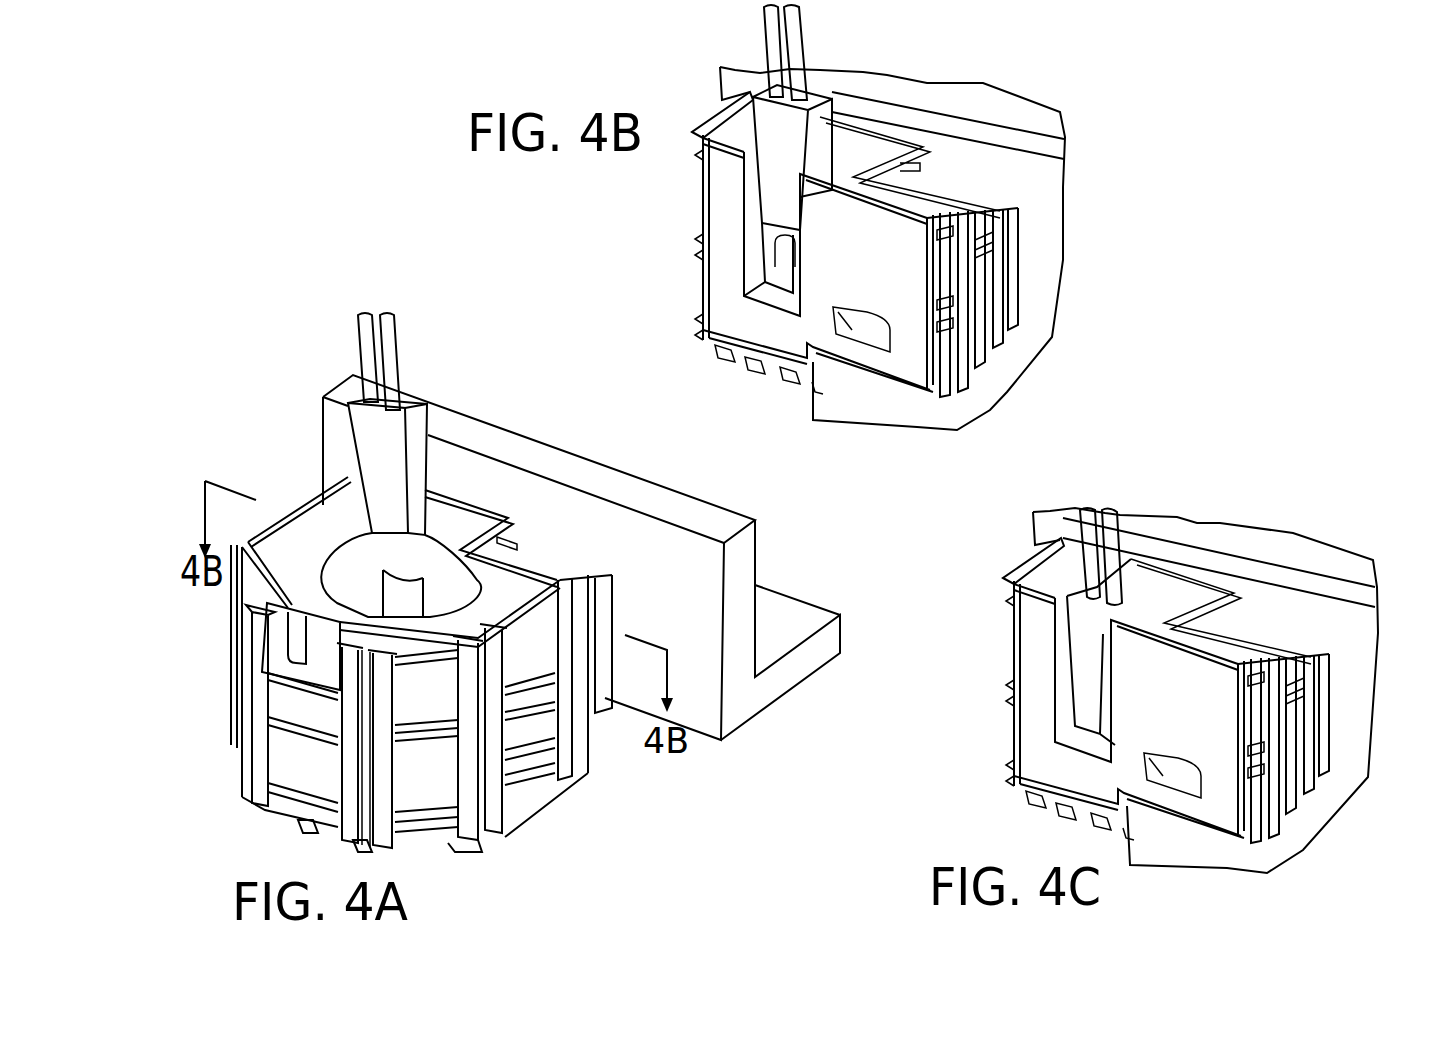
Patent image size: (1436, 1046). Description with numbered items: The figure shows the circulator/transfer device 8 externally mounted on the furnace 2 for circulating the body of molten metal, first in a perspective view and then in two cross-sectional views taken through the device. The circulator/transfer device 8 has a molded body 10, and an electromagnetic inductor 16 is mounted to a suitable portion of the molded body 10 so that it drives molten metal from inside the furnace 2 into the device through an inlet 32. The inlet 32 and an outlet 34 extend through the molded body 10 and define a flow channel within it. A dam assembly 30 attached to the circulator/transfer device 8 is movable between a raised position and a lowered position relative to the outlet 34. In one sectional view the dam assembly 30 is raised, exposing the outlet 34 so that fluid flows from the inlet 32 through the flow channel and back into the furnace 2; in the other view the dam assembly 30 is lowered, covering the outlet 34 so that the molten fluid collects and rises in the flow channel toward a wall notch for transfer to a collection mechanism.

In FIG. 4A, the furnace 2 is at (558, 440).
In FIG. 4B, the furnace 2 is at (1035, 88).
In FIG. 4C, the furnace 2 is at (1338, 533).
In FIG. 4A, the circulator/transfer device 8 is at (230, 764).
In FIG. 4C, the circulator/transfer device 8 is at (988, 780).
In FIG. 4B, the molded body 10 is at (690, 202).
In FIG. 4C, the molded body 10 is at (1000, 648).
In FIG. 4A, the electromagnetic inductor 16 is at (552, 818).
In FIG. 4B, the electromagnetic inductor 16 is at (982, 424).
In FIG. 4C, the electromagnetic inductor 16 is at (1297, 870).
In FIG. 4A, the dam assembly 30 is at (340, 336).
In FIG. 4B, the dam assembly 30 is at (752, 32).
In FIG. 4C, the dam assembly 30 is at (1116, 498).
In FIG. 4B, the inlet 32 is at (860, 335).
In FIG. 4C, the inlet 32 is at (1178, 786).
In FIG. 4B, the outlet 34 is at (784, 268).